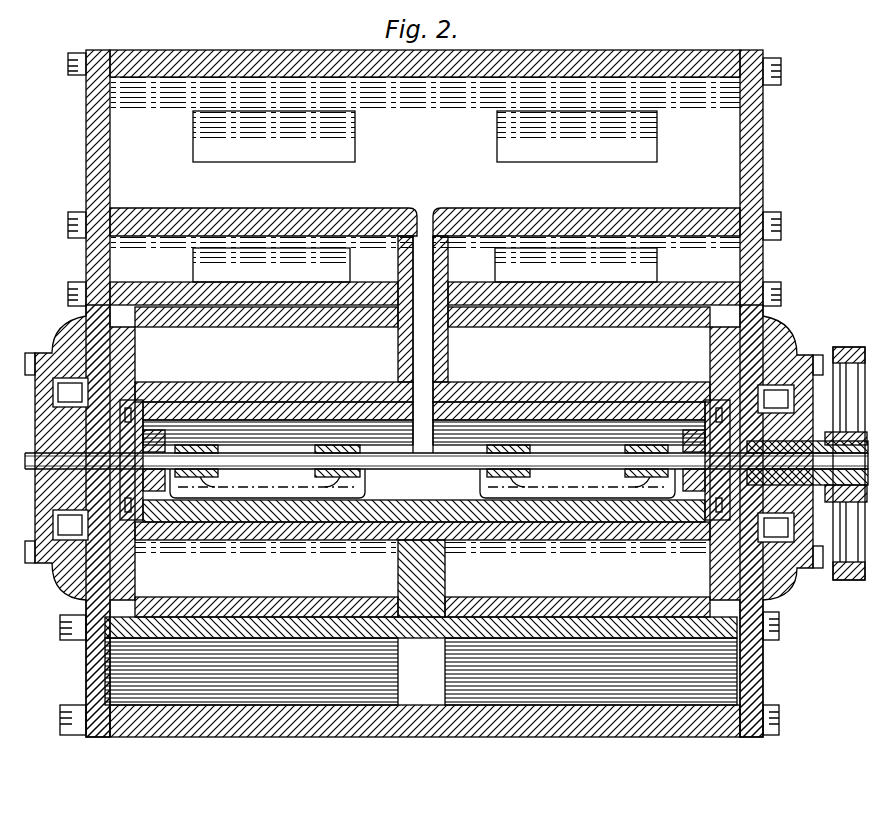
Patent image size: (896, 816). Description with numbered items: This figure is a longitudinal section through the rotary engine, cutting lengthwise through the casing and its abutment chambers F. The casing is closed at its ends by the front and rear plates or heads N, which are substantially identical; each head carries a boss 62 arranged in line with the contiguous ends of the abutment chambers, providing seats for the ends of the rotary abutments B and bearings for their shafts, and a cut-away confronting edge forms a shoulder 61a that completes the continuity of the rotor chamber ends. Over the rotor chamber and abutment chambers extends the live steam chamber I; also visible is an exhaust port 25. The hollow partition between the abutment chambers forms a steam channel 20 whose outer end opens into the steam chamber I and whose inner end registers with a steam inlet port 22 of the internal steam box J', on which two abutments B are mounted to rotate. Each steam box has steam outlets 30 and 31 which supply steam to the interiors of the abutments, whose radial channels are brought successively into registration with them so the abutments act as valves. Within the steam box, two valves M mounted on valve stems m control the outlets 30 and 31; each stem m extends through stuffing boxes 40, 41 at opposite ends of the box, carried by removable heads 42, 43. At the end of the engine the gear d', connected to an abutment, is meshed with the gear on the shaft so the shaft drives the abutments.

The front and rear plates or heads N is at (86, 181).
The live steam chamber I is at (425, 163).
The exhaust port 25 is at (262, 255).
The shoulder 61a is at (122, 302).
The steam channels 20 is at (426, 240).
The rotary abutments B is at (422, 354).
The steam inlet ports 22 is at (418, 413).
The internal steam box J' is at (422, 446).
The removable head 42 is at (142, 405).
The stuffing box 40 is at (172, 440).
The valve stem m is at (366, 495).
The valves M is at (478, 482).
The stuffing box 41 is at (666, 398).
The removable head 43 is at (708, 398).
The boss 62 is at (58, 354).
The steam outlet 30 is at (232, 548).
The steam outlet 31 is at (602, 548).
The abutment chambers F is at (95, 632).
The gear d' is at (807, 476).